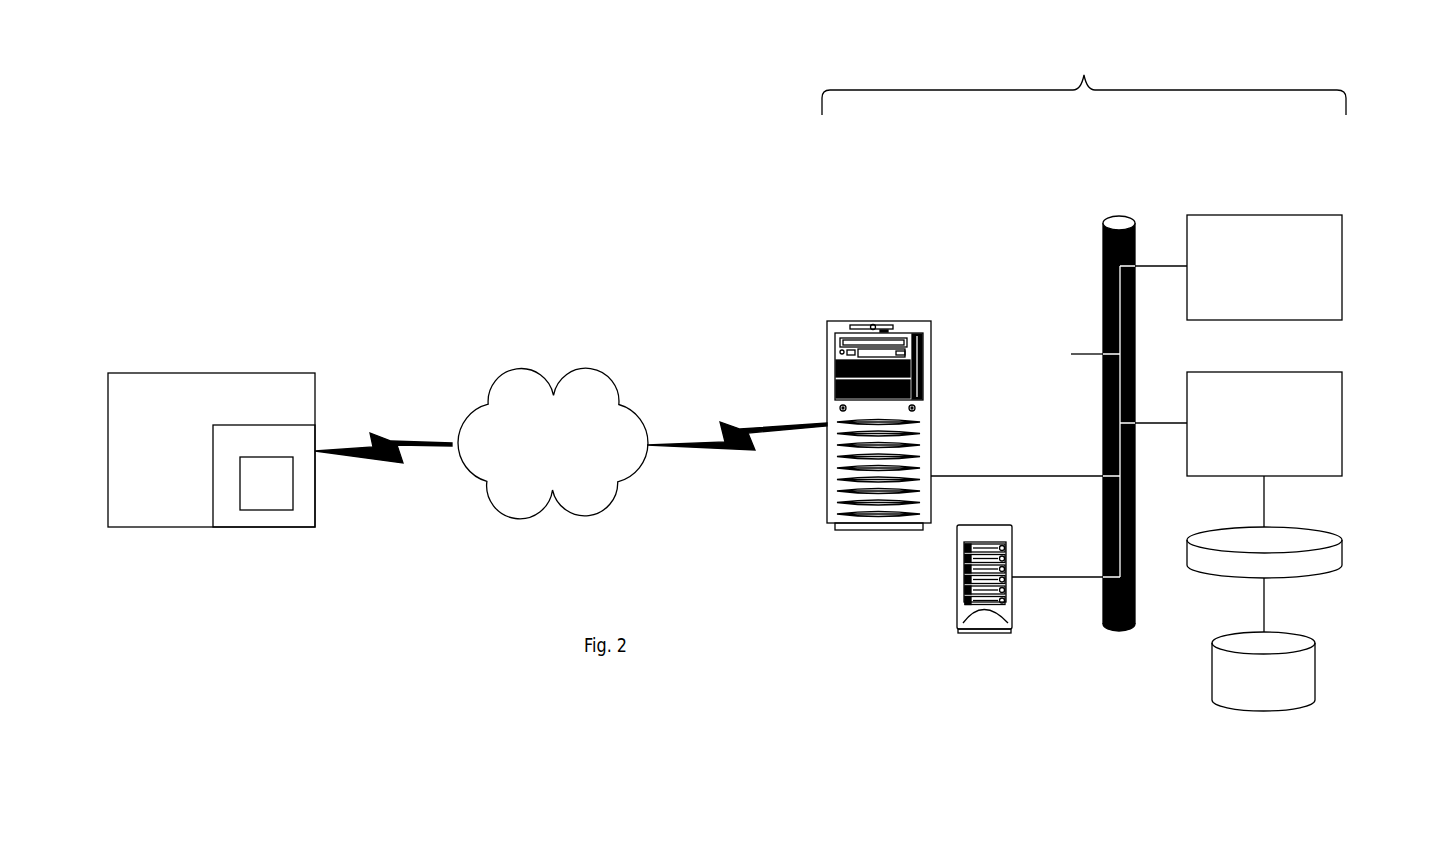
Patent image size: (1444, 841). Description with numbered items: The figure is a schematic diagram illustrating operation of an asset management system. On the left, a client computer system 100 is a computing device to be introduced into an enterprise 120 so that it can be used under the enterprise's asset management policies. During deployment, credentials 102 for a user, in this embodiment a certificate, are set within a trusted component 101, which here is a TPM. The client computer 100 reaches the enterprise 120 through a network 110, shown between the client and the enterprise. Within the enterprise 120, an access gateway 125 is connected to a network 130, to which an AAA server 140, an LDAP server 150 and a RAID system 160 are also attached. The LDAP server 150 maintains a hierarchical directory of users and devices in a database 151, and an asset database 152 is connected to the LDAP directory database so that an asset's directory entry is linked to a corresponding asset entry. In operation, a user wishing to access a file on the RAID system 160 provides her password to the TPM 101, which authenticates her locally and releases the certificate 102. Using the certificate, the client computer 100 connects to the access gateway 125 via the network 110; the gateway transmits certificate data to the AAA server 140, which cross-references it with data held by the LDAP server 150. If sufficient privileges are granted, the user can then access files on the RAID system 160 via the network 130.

The client computer system 100 is at (237, 400).
The trusted component 101 is at (227, 487).
The credentials 102 is at (264, 504).
The network 110 is at (597, 424).
The enterprise 120 is at (1084, 68).
The access gateway 125 is at (878, 373).
The network 130 is at (1108, 240).
The AAA server 140 is at (1263, 267).
The LDAP server 150 is at (1290, 423).
The database 151 is at (1290, 552).
The asset database 152 is at (1263, 682).
The RAID system 160 is at (995, 622).